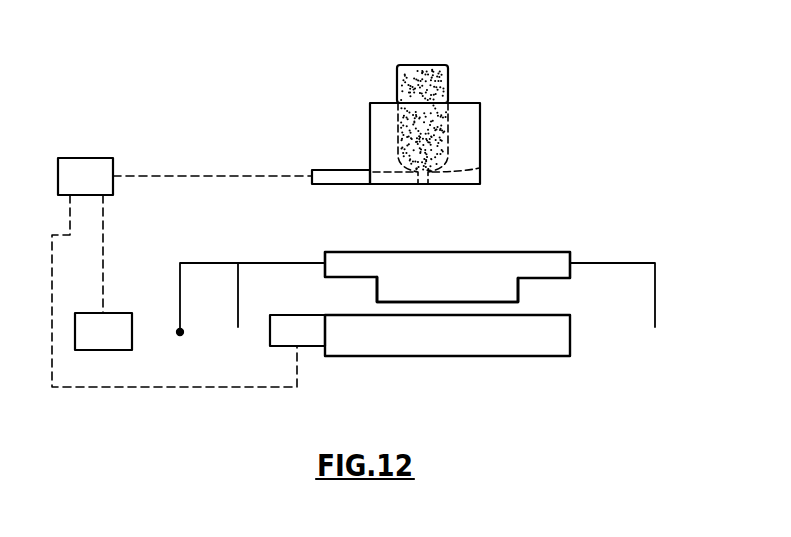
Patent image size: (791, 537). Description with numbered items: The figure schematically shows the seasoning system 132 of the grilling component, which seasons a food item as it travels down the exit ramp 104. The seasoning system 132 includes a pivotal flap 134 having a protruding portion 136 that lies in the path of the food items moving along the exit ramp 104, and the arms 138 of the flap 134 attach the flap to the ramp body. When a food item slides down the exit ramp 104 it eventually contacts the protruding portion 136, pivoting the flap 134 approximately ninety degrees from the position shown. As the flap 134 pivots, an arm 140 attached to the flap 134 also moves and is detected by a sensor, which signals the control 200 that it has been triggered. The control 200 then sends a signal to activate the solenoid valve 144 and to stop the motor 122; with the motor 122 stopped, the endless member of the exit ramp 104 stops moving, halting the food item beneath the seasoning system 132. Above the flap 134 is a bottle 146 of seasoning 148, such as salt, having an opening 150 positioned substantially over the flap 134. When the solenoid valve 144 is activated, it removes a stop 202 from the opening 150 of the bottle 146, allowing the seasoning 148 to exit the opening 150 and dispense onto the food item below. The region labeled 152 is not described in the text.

The exit ramp 104 is at (428, 356).
The motor 122 is at (316, 342).
The seasoning system 132 is at (536, 93).
The pivotal flap 134 is at (537, 262).
The protruding portion 136 is at (452, 292).
The arms 138 is at (657, 297).
The arm 140 is at (178, 301).
The solenoid valve 144 is at (343, 170).
The bottle 146 is at (448, 82).
The seasoning 148 is at (440, 136).
The opening 150 is at (480, 168).
The nozzle outlet 152 is at (401, 178).
The control 200 is at (182, 272).
The stop 202 is at (103, 331).